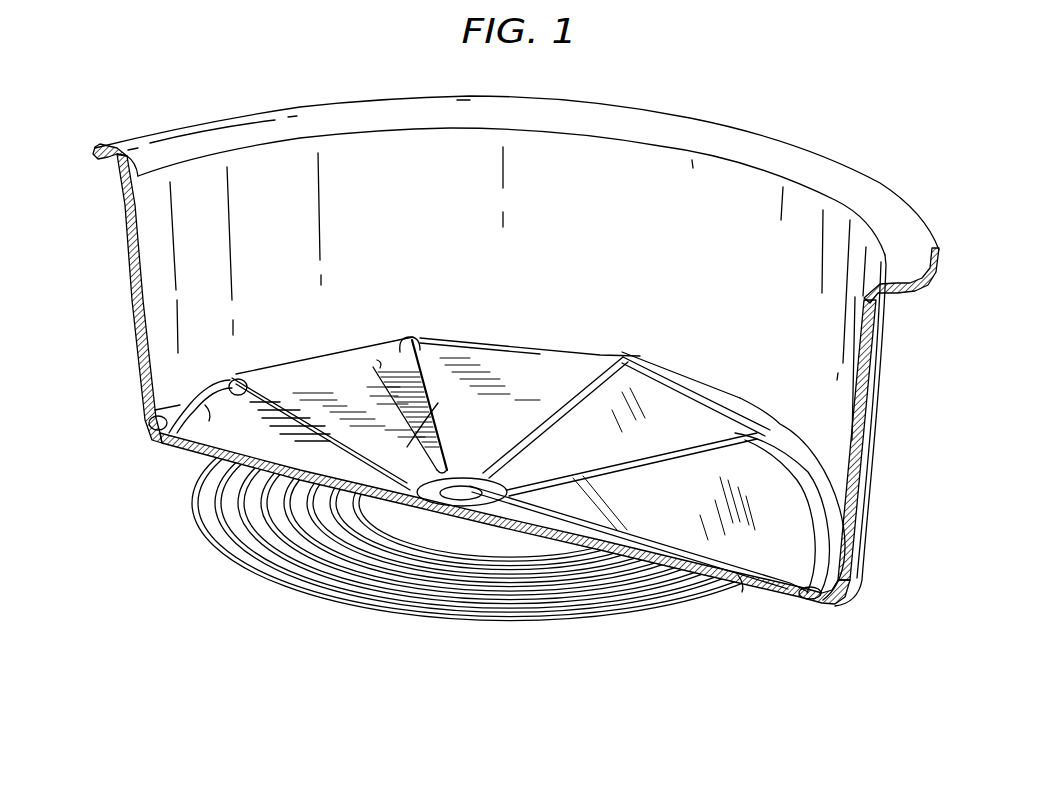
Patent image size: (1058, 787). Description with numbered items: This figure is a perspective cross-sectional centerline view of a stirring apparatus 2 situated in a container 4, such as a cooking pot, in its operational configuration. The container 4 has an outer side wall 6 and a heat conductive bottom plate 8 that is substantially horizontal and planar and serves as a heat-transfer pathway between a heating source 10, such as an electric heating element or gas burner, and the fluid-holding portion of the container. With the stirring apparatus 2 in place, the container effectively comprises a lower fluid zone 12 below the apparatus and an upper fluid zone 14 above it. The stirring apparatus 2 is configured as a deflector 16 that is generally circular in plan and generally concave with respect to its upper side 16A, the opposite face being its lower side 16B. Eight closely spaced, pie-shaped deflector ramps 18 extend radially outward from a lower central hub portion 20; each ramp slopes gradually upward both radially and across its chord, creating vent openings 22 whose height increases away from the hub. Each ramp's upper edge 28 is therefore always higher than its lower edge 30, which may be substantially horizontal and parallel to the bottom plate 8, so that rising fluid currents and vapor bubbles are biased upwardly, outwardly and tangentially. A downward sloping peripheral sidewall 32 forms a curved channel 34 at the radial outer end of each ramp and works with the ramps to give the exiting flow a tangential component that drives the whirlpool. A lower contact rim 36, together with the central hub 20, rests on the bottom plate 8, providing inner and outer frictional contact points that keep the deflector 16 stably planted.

The stirring apparatus 2 is at (658, 535).
The container 4 is at (748, 130).
The outer side wall 6 is at (150, 250).
The heat conductive bottom plate 8 is at (220, 440).
The heating source 10 is at (373, 597).
The lower fluid zone 12 is at (215, 438).
The upper fluid zone 14 is at (180, 338).
The deflector structure 16 is at (823, 562).
The upper side 16A is at (632, 356).
The lower side 16B is at (780, 597).
The deflector ramp 18 is at (343, 418).
The lower central hub portion 20 is at (462, 493).
The vent opening 22 is at (399, 383).
The upper edge 28 is at (233, 373).
The lower edge 30 is at (434, 410).
The peripheral sidewall 32 is at (172, 404).
The curved channel 34 is at (182, 440).
The lower contact rim 36 is at (149, 414).